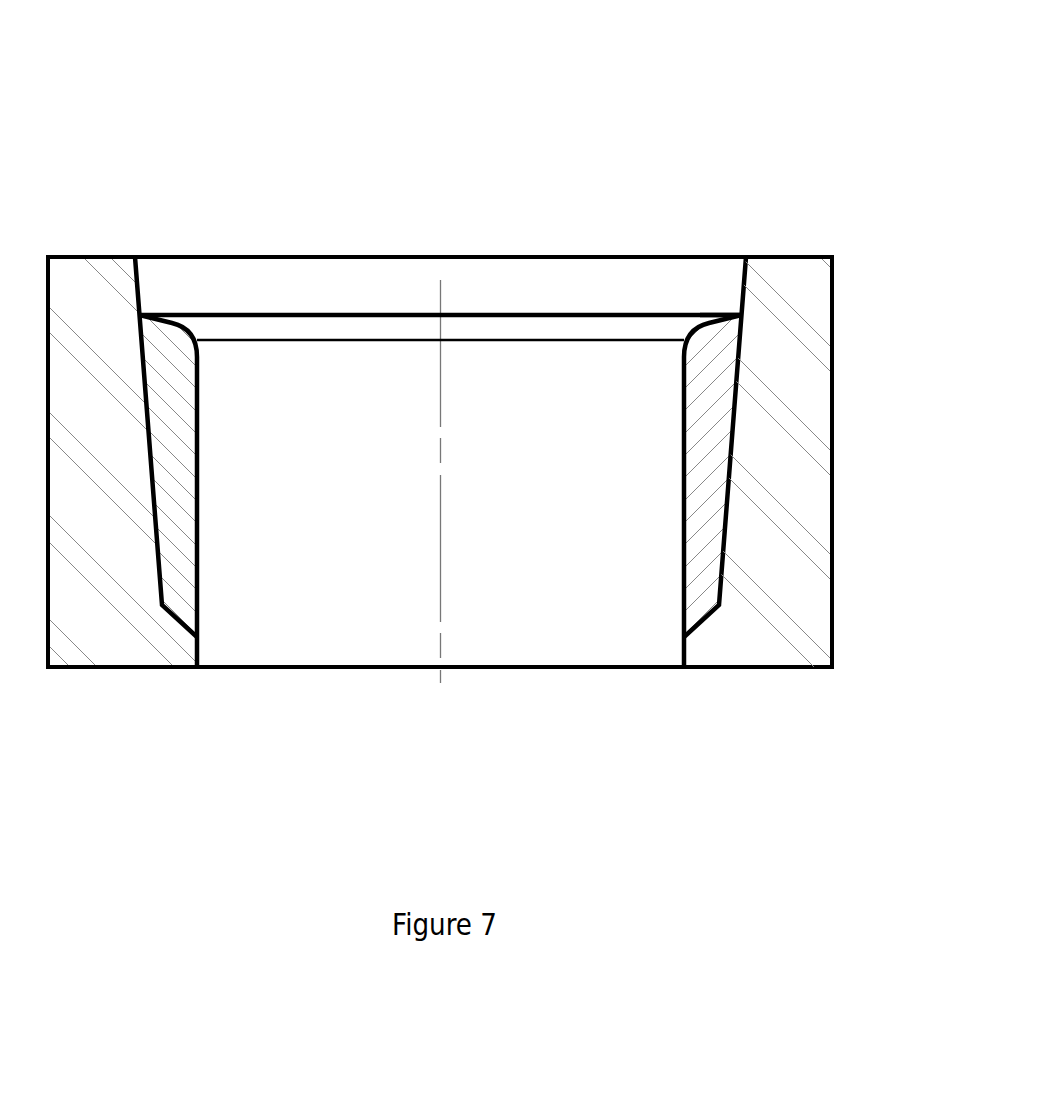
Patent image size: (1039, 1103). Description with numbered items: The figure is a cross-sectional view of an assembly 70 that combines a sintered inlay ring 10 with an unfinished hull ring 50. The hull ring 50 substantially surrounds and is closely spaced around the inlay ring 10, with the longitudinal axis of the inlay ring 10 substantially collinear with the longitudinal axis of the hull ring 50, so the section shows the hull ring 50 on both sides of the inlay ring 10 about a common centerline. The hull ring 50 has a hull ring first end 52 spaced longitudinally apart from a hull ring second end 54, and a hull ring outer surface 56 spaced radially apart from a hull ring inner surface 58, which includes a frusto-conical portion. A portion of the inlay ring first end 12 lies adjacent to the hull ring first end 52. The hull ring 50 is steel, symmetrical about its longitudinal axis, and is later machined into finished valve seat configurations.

The assembly 70 is at (64, 176).
The hull ring first end 52 is at (92, 257).
The inlay ring first end 12 is at (152, 257).
The hull ring inner surface 58 is at (717, 272).
The hull ring outer surface 56 is at (833, 433).
The hull ring 50 is at (103, 424).
The inlay ring 10 is at (726, 374).
The hull ring second end 54 is at (122, 668).